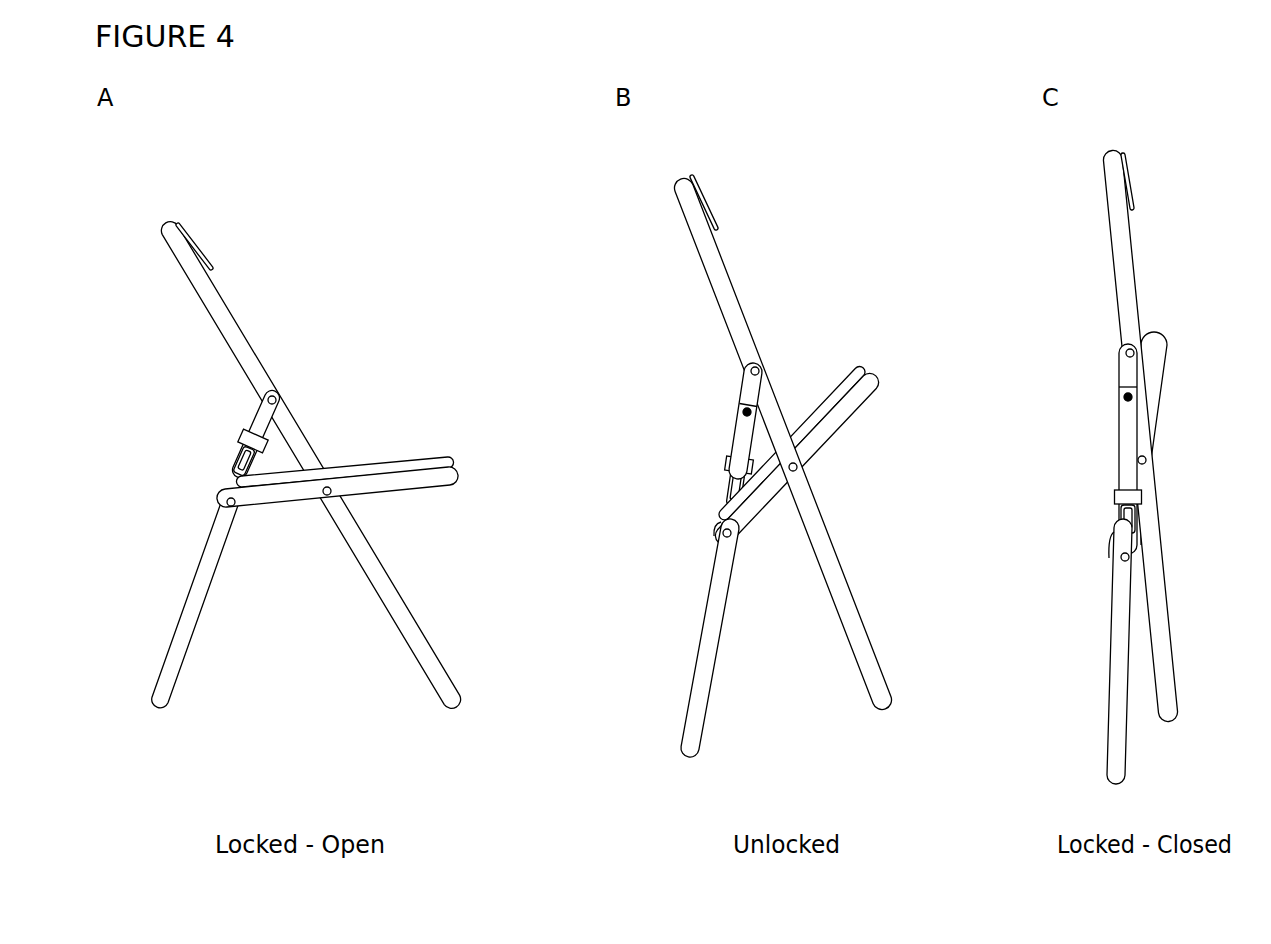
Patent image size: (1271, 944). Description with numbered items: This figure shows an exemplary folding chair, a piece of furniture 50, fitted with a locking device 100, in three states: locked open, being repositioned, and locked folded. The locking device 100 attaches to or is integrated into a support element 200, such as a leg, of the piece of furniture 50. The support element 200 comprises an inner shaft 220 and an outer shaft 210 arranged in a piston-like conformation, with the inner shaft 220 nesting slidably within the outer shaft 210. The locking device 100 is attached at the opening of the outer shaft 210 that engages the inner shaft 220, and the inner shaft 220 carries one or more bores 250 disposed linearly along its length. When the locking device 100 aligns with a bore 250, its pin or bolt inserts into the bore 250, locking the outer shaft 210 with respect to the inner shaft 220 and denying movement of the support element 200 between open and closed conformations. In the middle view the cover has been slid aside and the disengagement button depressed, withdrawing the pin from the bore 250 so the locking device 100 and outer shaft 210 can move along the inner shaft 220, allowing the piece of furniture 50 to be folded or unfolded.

The piece of furniture 50 is at (449, 463).
The locking device 100 is at (237, 446).
The support element 200 is at (208, 524).
The outer shaft 210 is at (713, 576).
The inner shaft 220 is at (740, 446).
The bore 250 is at (742, 410).